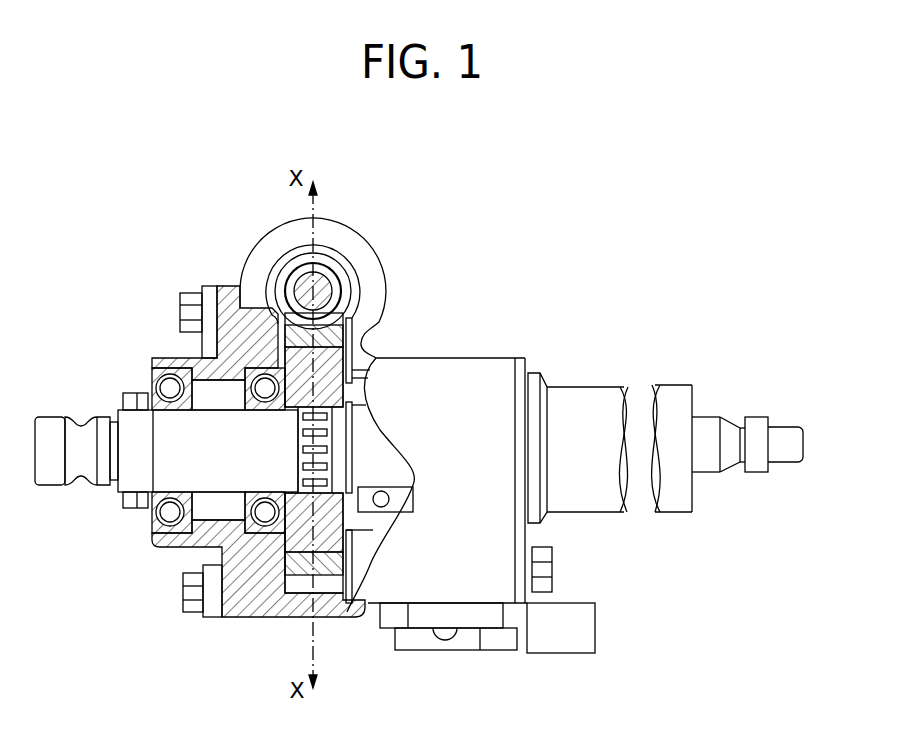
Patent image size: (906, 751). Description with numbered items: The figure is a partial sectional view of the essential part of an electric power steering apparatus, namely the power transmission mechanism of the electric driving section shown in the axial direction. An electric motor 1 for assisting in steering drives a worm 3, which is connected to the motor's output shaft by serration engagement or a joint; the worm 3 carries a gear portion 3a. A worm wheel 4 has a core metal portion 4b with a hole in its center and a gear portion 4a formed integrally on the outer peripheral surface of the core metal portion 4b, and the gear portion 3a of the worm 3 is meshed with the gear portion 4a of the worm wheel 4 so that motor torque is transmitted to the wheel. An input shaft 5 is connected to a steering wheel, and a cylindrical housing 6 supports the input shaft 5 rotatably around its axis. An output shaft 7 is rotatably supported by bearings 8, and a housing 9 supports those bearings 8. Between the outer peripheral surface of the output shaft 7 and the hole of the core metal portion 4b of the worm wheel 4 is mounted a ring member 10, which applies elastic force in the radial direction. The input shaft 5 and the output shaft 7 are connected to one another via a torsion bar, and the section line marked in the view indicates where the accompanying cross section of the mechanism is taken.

The electric motor 1 is at (277, 270).
The worm 3 is at (330, 280).
The gear portion of the worm 3a is at (343, 295).
The worm wheel 4 is at (362, 393).
The gear portion of the worm wheel 4a is at (341, 338).
The core metal portion 4b is at (334, 362).
The input shaft 5 is at (707, 427).
The cylindrical housing 6 is at (587, 500).
The output shaft 7 is at (167, 462).
The bearings 8 is at (153, 380).
The housing 9 is at (238, 578).
The ring member 10 is at (297, 442).